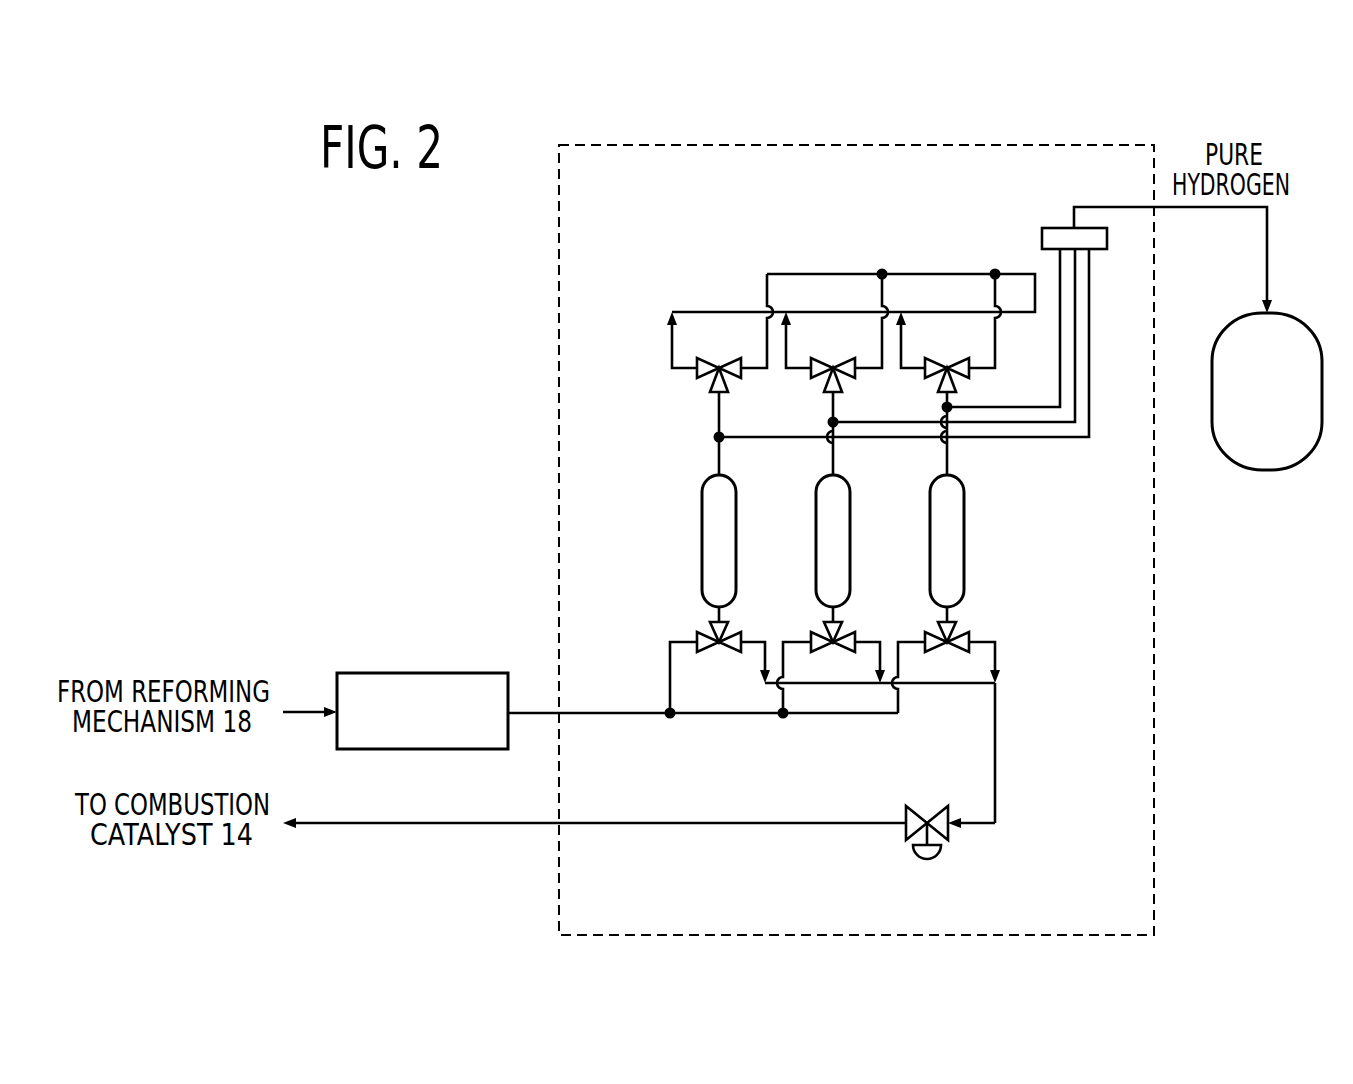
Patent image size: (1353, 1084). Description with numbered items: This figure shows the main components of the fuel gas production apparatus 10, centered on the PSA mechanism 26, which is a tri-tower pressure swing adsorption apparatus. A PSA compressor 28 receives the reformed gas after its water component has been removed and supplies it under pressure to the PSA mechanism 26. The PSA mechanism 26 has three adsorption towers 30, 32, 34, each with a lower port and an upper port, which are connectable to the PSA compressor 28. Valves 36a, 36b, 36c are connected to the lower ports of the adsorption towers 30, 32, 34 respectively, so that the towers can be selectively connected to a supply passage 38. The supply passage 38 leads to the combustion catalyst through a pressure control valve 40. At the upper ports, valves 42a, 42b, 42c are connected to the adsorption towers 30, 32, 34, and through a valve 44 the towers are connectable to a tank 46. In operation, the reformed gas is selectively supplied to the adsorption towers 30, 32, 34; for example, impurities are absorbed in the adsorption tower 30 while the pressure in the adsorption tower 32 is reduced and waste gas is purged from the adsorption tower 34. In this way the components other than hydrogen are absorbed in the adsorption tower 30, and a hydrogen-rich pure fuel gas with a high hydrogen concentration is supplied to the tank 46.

The fuel gas production apparatus 10 is at (428, 252).
The PSA mechanism 26 is at (912, 138).
The PSA compressor 28 is at (500, 673).
The adsorption tower 30 is at (702, 479).
The adsorption tower 32 is at (816, 479).
The adsorption tower 34 is at (930, 479).
The valve 36a is at (742, 631).
The valve 36b is at (856, 631).
The valve 36c is at (970, 631).
The supply passage 38 is at (758, 826).
The pressure control valve 40 is at (928, 807).
The valve 42a is at (694, 384).
The valve 42b is at (808, 384).
The valve 42c is at (922, 384).
The valve 44 is at (1050, 227).
The tank 46 is at (1267, 471).